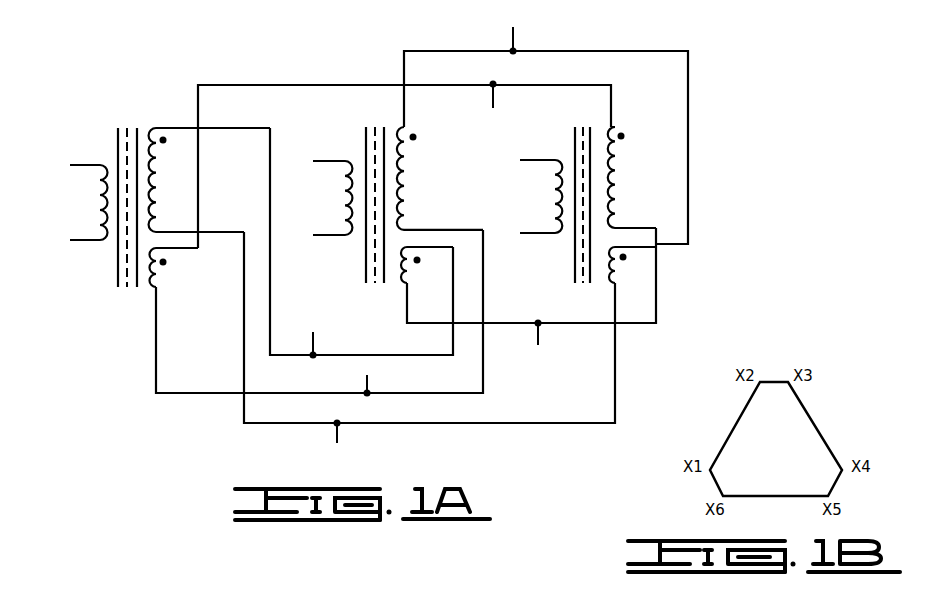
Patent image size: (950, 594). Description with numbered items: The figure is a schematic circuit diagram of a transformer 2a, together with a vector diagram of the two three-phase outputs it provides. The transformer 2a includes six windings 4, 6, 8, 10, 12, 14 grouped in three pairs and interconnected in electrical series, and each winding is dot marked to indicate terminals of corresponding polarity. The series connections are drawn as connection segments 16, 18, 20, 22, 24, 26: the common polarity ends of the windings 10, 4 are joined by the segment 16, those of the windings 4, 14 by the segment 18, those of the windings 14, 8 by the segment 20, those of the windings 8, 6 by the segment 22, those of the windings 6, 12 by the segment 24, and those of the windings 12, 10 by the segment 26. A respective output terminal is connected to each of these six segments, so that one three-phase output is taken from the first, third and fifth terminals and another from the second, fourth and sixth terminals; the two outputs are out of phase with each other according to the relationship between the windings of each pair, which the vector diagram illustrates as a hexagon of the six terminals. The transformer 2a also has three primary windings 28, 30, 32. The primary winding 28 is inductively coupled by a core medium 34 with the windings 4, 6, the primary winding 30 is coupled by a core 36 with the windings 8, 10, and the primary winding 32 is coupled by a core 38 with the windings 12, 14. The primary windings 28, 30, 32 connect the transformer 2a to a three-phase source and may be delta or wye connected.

The transformer 2a is at (652, 41).
The winding 4 is at (157, 177).
The winding 6 is at (160, 279).
The winding 8 is at (405, 176).
The winding 10 is at (407, 270).
The winding 12 is at (614, 161).
The winding 14 is at (612, 268).
The connection segment 16 is at (357, 355).
The connection segment 18 is at (405, 424).
The connection segment 20 is at (580, 50).
The connection segment 22 is at (483, 362).
The connection segment 24 is at (270, 84).
The connection segment 26 is at (640, 324).
The primary winding 28 is at (100, 200).
The primary winding 30 is at (345, 199).
The primary winding 32 is at (555, 196).
The core medium 34 is at (136, 127).
The core 36 is at (384, 126).
The core 38 is at (595, 126).